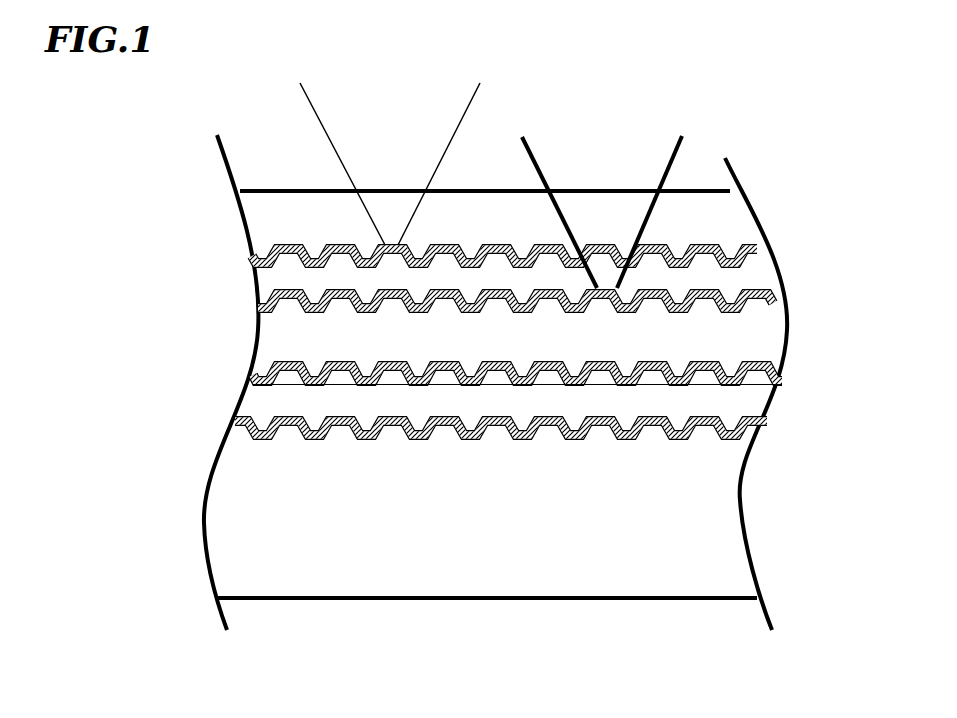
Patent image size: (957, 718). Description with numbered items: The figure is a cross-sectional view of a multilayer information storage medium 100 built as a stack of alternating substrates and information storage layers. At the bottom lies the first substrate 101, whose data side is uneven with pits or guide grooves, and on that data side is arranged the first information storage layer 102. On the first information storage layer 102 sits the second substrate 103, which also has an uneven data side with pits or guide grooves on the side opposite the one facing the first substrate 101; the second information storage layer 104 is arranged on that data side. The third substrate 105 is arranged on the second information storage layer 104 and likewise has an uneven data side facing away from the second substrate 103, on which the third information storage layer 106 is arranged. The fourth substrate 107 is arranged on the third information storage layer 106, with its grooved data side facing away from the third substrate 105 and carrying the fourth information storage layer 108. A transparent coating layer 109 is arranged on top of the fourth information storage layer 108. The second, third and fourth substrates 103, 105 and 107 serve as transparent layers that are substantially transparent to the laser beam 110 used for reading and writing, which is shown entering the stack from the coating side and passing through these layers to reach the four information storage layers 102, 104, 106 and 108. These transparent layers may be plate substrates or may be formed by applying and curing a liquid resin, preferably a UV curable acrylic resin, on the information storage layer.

The multilayer information storage medium 100 is at (632, 105).
The first substrate 101 is at (723, 567).
The first information storage layer 102 is at (723, 417).
The second substrate 103 is at (270, 403).
The second information storage layer 104 is at (727, 362).
The third substrate 105 is at (273, 347).
The third information storage layer 106 is at (730, 287).
The fourth substrate 107 is at (270, 278).
The fourth information storage layer 108 is at (728, 245).
The transparent coating layer 109 is at (702, 212).
The laser beam 110 is at (470, 108).